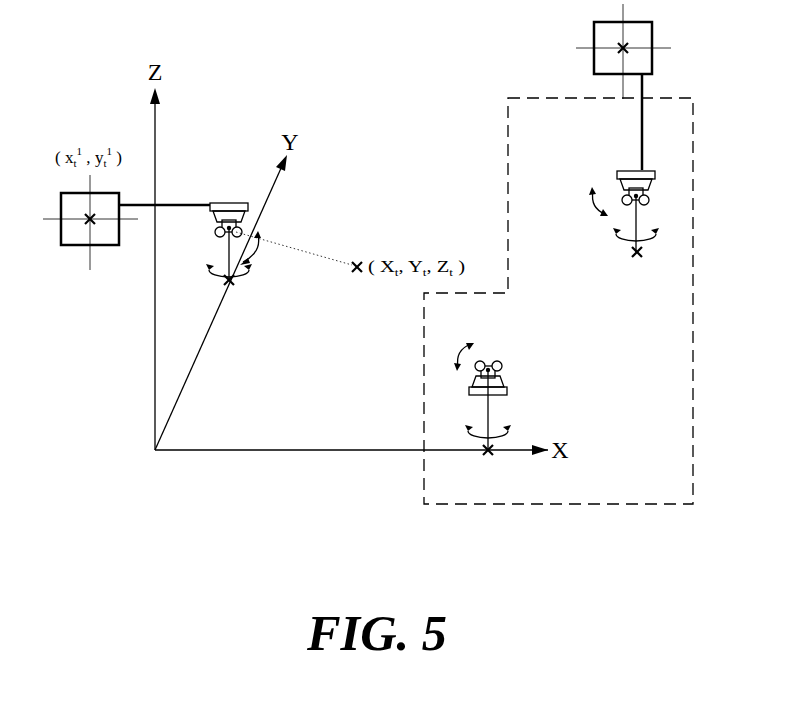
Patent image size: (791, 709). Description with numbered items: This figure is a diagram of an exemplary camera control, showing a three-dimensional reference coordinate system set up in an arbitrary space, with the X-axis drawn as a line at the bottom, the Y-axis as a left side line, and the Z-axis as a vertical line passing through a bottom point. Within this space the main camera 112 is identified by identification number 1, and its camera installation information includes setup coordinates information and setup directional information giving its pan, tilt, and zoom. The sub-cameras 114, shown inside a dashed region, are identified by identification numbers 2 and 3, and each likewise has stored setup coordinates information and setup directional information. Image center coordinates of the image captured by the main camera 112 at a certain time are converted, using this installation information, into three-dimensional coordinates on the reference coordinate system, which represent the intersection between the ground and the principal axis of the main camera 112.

The main camera 112 is at (292, 224).
The sub-cameras 114 is at (558, 284).
The identification number of the main camera 1 is at (224, 181).
The identification number of a sub-camera 2 is at (589, 192).
The identification number of a sub-camera 3 is at (533, 387).